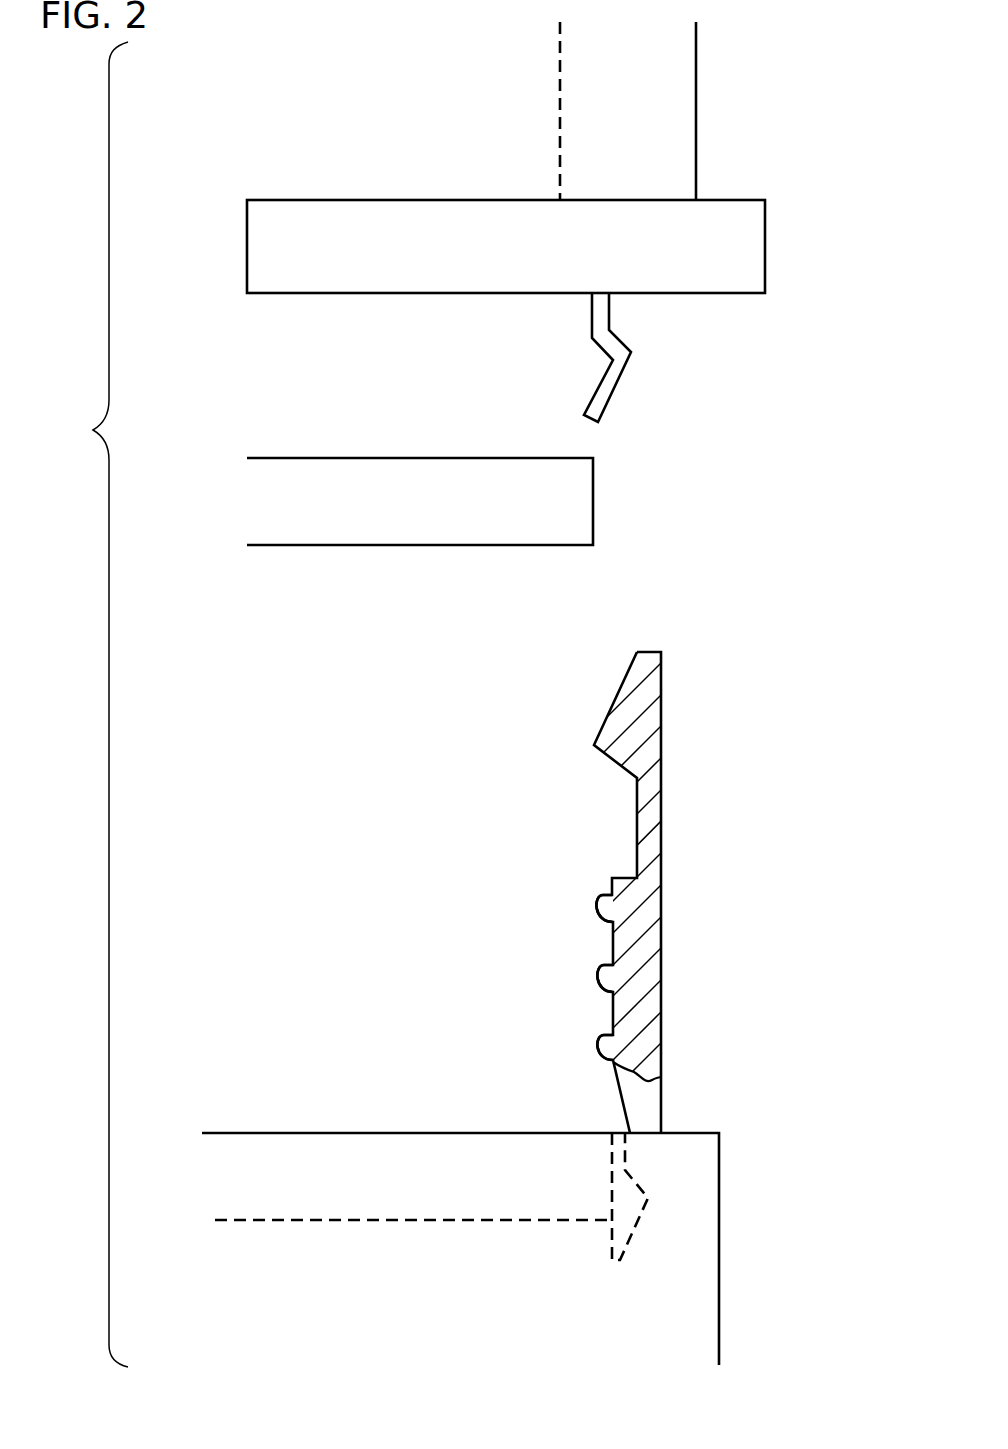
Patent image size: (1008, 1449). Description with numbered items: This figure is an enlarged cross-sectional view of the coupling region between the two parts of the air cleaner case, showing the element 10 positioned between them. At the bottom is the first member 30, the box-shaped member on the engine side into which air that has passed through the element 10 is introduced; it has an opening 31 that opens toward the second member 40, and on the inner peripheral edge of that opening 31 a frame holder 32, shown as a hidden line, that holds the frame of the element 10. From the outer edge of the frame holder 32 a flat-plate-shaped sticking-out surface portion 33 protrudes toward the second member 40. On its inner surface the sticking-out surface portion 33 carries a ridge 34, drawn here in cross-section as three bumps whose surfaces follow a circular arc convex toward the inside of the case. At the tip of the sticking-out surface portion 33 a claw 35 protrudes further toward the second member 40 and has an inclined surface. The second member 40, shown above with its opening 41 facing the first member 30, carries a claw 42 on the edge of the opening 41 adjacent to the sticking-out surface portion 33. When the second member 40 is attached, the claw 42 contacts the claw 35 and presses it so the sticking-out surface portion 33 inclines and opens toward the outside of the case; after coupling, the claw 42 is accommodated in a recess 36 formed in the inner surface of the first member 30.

The element 10 is at (593, 498).
The first member 30 is at (719, 1199).
The opening 31 is at (310, 1093).
The frame holder 32 is at (353, 1220).
The sticking-out surface portion 33 is at (661, 863).
The ridge 34 is at (603, 1045).
The claw 35 is at (619, 691).
The recess 36 is at (635, 1217).
The second member 40 is at (696, 69).
The opening 41 is at (298, 312).
The claw 42 is at (612, 385).